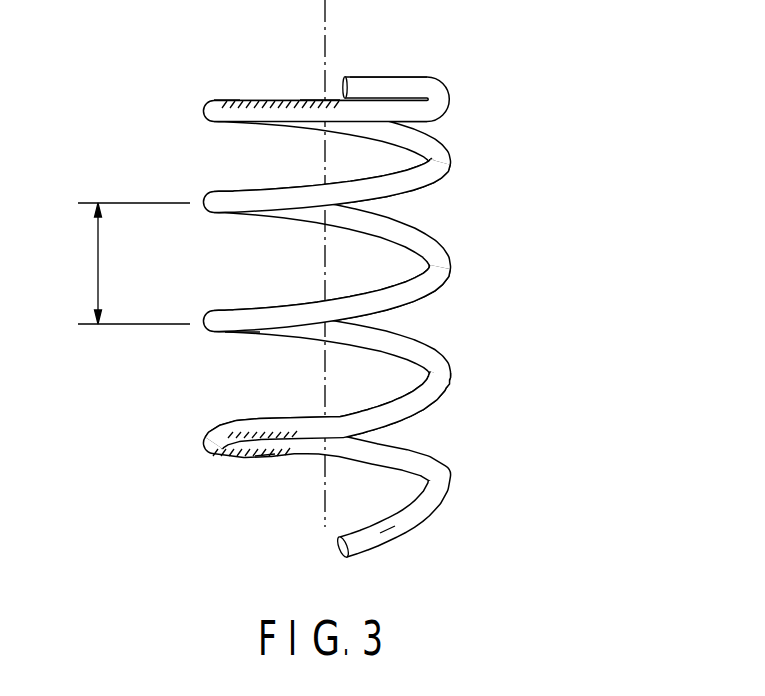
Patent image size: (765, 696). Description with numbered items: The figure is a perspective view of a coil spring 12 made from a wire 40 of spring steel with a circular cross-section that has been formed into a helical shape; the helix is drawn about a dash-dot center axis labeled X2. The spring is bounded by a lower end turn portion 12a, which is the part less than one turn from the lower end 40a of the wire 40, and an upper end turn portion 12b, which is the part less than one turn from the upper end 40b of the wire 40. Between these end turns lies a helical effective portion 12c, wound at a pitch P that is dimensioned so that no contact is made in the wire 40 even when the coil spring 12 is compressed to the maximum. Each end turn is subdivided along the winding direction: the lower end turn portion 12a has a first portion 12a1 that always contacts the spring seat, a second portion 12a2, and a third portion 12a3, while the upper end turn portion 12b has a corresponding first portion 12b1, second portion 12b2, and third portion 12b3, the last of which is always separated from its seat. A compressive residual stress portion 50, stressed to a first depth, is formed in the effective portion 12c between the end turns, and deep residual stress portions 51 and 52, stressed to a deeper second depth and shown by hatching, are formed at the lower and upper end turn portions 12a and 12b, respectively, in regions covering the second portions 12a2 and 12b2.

The coil spring 12 is at (329, 293).
The lower end turn portion 12a is at (330, 480).
The first portion 12a1 is at (403, 524).
The second portion 12a2 is at (237, 458).
The third portion 12a3 is at (262, 462).
The upper end turn portion 12b is at (364, 55).
The first portion 12b1 is at (390, 77).
The second portion 12b2 is at (238, 100).
The third portion 12b3 is at (306, 50).
The effective portion 12c is at (340, 267).
The wire 40 is at (332, 293).
The lower end 40a is at (332, 548).
The upper end 40b is at (338, 76).
The compressive residual stress portion 50 is at (240, 332).
The first deep residual stress portion 51 is at (203, 443).
The second deep residual stress portion 52 is at (283, 100).
The pitch P is at (97, 262).
The central axis X2 is at (322, 505).